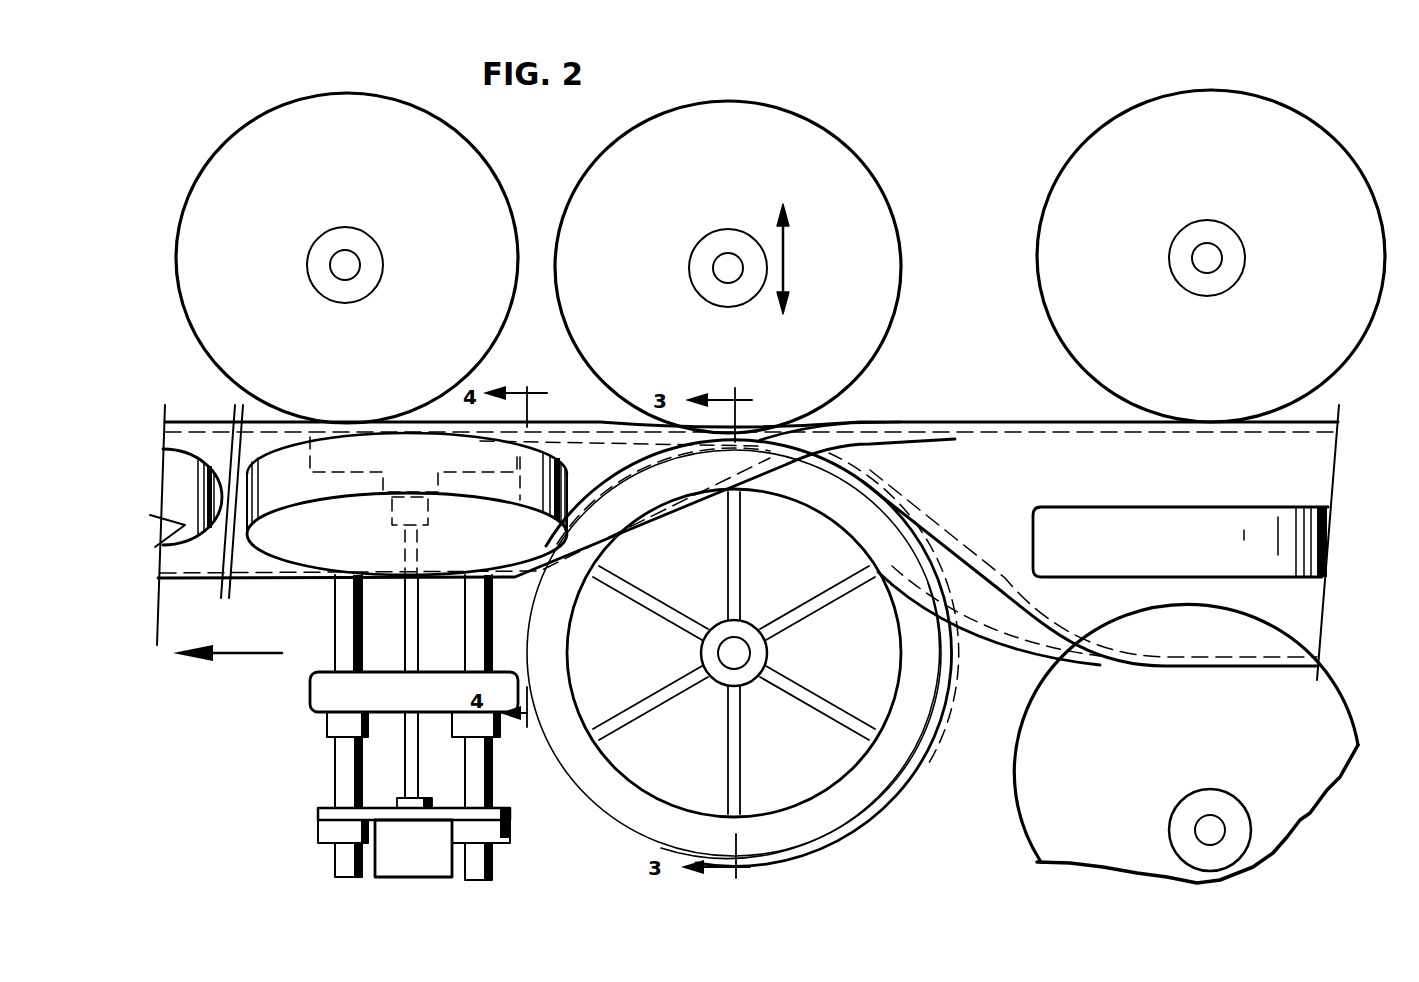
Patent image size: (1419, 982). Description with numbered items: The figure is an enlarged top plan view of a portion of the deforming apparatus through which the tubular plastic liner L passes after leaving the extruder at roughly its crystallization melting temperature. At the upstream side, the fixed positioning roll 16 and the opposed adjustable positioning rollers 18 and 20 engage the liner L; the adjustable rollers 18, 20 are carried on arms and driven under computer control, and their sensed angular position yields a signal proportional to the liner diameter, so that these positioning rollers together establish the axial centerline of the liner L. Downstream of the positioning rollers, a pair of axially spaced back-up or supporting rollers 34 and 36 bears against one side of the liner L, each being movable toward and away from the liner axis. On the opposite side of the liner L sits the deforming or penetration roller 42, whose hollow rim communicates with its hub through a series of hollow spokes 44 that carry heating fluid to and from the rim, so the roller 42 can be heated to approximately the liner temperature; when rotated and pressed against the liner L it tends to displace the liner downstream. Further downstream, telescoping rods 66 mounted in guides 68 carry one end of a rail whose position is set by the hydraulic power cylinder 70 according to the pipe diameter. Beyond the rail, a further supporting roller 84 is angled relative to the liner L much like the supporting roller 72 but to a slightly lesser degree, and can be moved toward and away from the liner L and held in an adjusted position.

The fixed positioning roll 16 is at (1052, 178).
The adjustable positioning roller 18 is at (1057, 507).
The adjustable positioning roller 20 is at (1040, 780).
The back-up roller 34 is at (886, 192).
The back-up roller 36 is at (500, 180).
The deforming roller 42 is at (857, 815).
The hollow spokes 44 is at (743, 767).
The telescoping rods 66 is at (336, 633).
The guides 68 is at (312, 697).
The power cylinder 70 is at (426, 866).
The supporting roller 72 is at (288, 560).
The supporting roller 84 is at (187, 545).
The liner L is at (1032, 412).